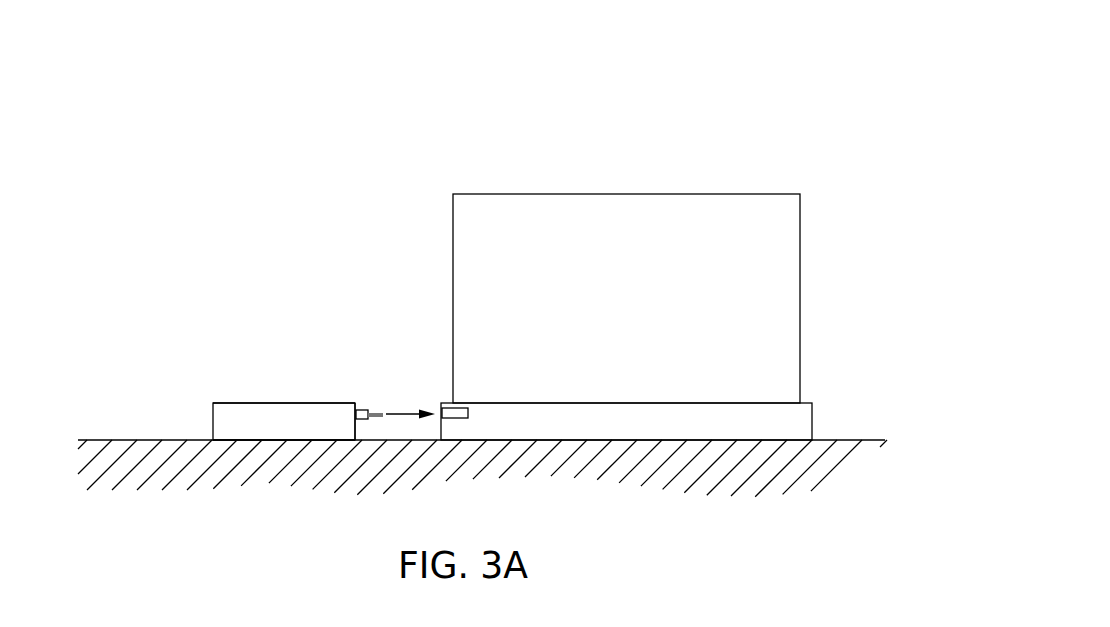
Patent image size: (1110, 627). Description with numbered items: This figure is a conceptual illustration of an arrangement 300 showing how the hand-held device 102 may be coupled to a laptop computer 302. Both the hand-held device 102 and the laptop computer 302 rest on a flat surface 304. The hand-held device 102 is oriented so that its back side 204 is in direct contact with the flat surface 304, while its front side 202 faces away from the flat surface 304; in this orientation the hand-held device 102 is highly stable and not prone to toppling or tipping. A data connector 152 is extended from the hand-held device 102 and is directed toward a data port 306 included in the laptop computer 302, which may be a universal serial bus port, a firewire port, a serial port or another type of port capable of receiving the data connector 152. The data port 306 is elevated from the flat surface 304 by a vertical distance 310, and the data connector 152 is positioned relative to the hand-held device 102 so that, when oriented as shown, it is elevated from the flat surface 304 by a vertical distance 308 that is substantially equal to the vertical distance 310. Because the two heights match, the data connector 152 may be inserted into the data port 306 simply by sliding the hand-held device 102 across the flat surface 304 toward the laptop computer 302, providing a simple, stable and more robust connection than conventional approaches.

The system 300 is at (703, 86).
The laptop computer 302 is at (573, 193).
The flat surface 304 is at (114, 438).
The data port 306 is at (456, 408).
The vertical distance 308 is at (353, 405).
The vertical distance 310 is at (476, 405).
The hand-held device 102 is at (230, 403).
The front side 202 is at (316, 403).
The data connector 152 is at (362, 409).
The back side 204 is at (298, 440).